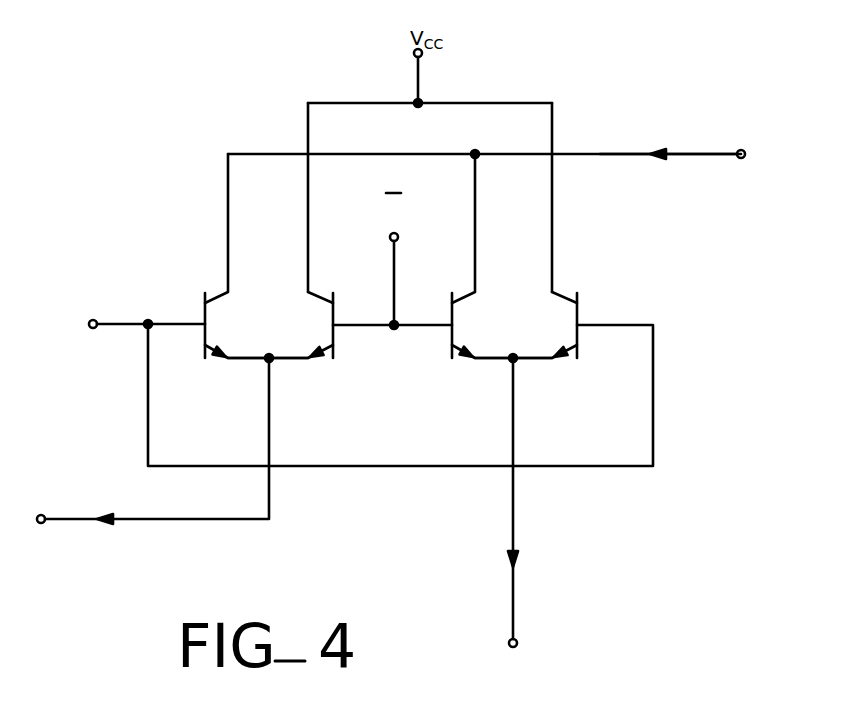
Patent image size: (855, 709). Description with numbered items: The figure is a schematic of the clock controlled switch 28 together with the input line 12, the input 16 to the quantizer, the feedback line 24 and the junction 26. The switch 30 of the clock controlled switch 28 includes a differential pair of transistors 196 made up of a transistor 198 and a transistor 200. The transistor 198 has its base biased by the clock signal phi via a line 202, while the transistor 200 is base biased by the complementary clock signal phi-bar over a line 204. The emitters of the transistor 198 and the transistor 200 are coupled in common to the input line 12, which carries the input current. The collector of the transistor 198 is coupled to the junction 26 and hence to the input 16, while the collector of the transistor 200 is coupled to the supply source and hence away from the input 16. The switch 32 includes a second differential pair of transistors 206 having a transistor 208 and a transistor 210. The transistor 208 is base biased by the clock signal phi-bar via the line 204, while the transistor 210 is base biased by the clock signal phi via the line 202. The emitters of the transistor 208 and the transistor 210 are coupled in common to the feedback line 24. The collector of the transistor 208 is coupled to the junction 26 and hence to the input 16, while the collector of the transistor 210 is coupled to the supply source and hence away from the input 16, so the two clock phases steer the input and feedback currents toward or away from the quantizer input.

The input line 12 is at (158, 521).
The input to quantizer 16 is at (600, 155).
The feedback line 24 is at (513, 516).
The junction 26 is at (475, 154).
The clock controlled switch 28 is at (250, 258).
The switch 30 is at (268, 281).
The switch 32 is at (538, 282).
The differential pair of transistors 196 is at (264, 295).
The transistor 198 is at (208, 370).
The transistor 200 is at (318, 365).
The line 202 is at (121, 323).
The line 204 is at (394, 273).
The differential pair of transistors 206 is at (518, 298).
The transistor 208 is at (462, 367).
The transistor 210 is at (565, 365).